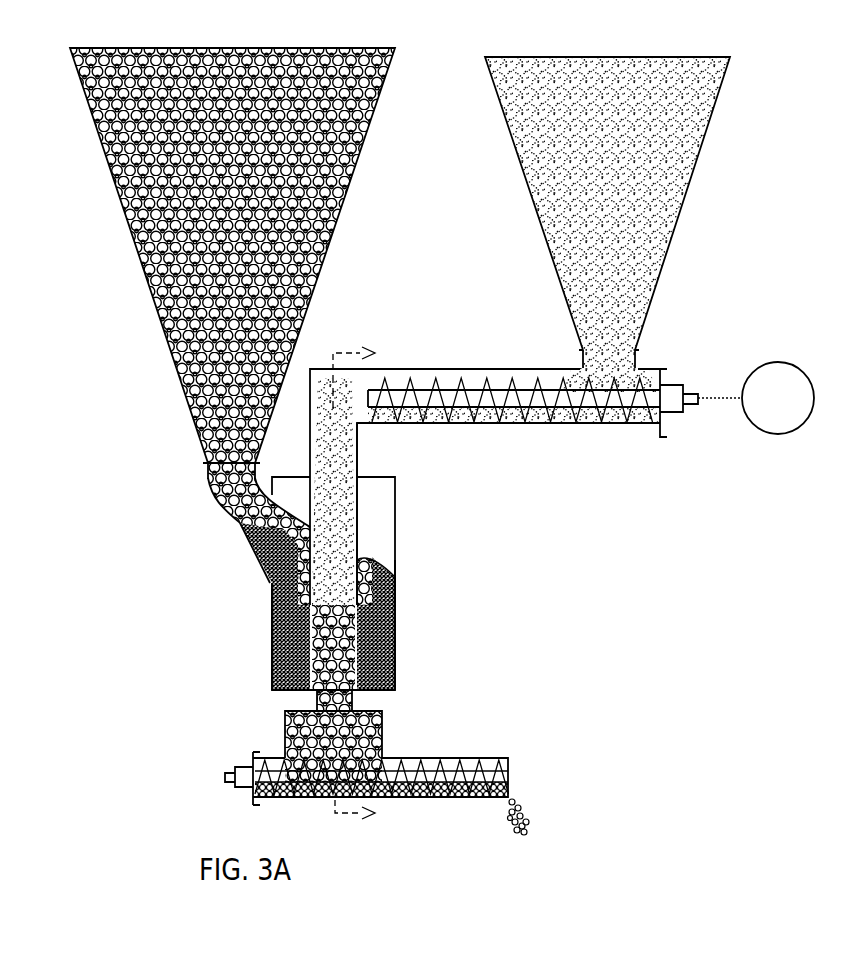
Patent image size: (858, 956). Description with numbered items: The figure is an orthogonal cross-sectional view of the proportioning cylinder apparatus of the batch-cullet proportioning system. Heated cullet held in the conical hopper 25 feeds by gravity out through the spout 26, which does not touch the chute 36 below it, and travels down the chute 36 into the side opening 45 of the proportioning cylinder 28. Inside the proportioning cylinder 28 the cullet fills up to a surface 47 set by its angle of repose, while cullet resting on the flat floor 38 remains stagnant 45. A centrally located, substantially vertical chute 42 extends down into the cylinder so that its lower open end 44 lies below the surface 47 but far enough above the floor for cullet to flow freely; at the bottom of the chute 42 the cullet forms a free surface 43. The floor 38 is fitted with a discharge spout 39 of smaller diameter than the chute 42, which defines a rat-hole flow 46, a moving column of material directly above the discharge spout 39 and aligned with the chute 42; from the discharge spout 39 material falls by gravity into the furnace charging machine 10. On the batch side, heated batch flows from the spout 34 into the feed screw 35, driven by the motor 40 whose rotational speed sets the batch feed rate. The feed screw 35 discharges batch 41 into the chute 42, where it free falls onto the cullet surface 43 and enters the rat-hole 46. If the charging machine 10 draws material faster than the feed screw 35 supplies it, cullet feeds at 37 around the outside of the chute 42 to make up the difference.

The furnace charging machine 10 is at (413, 797).
The hopper 25 is at (167, 280).
The spout 26 is at (212, 460).
The proportioning cylinder 28 is at (270, 637).
The spout 34 is at (618, 333).
The feed screw 35 is at (525, 402).
The chute 36 is at (227, 515).
The cullet feed around chute 37 is at (395, 568).
The floor 38 is at (285, 692).
The discharge spout 39 is at (345, 707).
The motor 40 is at (767, 438).
The batch 41 is at (340, 485).
The chute 42 is at (358, 446).
The surface 43 is at (395, 602).
The lower open end 44 is at (270, 605).
The side opening / stagnant cullet 45 is at (257, 570).
The rat-hole flow 46 is at (398, 652).
The surface 47 is at (372, 577).